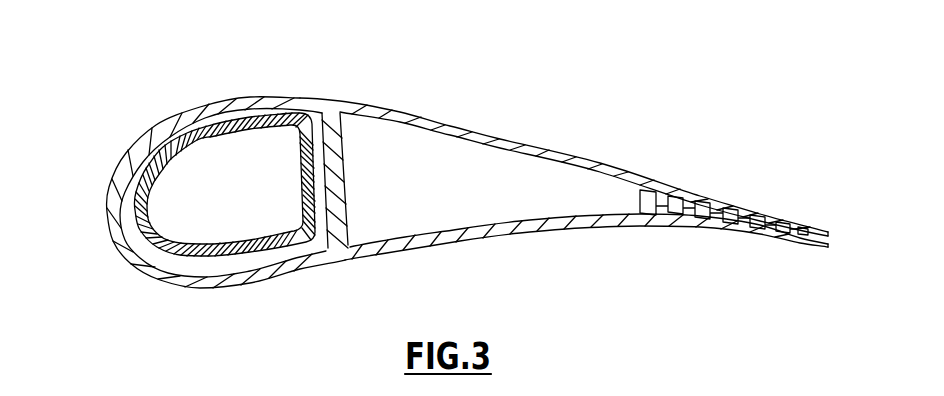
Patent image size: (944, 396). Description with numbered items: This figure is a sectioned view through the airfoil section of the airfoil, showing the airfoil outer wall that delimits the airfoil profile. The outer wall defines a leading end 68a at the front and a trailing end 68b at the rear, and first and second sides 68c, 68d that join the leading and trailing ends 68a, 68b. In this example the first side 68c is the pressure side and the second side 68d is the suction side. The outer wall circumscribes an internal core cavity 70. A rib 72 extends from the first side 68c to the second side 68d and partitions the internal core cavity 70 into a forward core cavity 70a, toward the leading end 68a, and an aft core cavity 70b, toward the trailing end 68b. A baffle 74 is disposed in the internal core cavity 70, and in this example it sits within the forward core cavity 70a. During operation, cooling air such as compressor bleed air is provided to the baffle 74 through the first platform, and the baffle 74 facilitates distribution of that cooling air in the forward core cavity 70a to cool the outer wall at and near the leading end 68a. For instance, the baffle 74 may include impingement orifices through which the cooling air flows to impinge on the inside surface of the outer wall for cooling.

The leading end 68a is at (120, 262).
The trailing end 68b is at (814, 246).
The first side 68c is at (330, 263).
The second side 68d is at (341, 100).
The internal core cavity 70 is at (508, 196).
The forward core cavity 70a is at (213, 264).
The aft core cavity 70b is at (422, 194).
The rib 72 is at (344, 150).
The baffle 74 is at (230, 150).